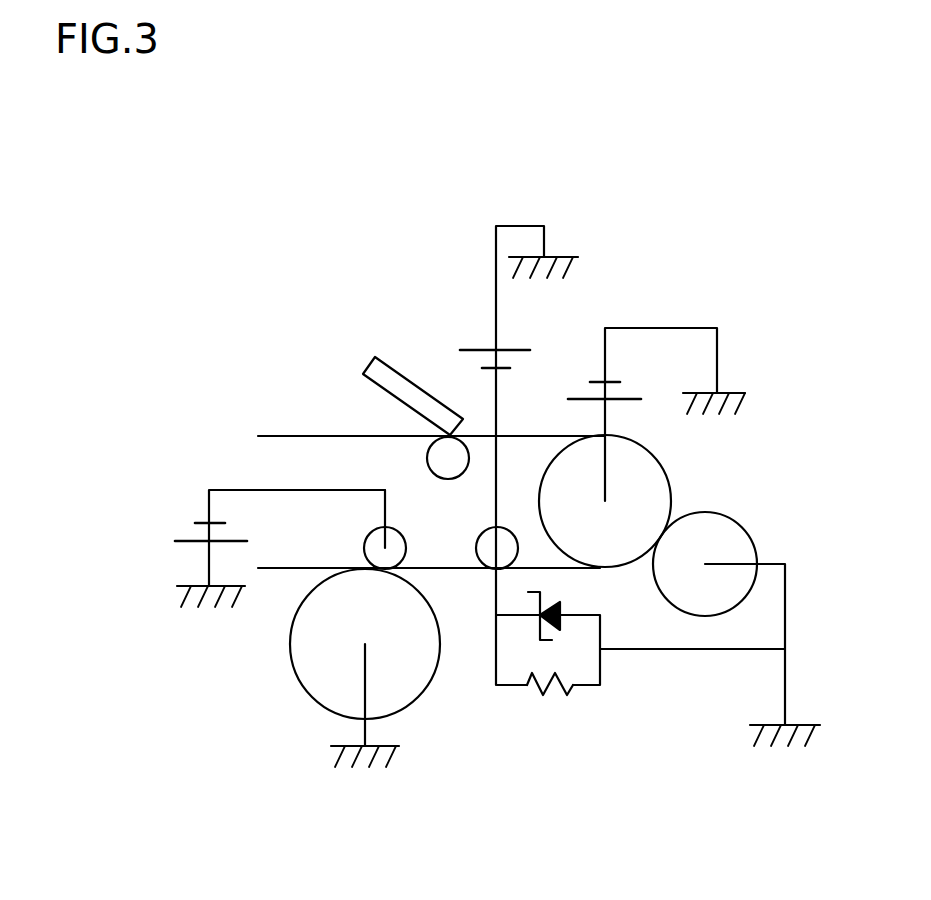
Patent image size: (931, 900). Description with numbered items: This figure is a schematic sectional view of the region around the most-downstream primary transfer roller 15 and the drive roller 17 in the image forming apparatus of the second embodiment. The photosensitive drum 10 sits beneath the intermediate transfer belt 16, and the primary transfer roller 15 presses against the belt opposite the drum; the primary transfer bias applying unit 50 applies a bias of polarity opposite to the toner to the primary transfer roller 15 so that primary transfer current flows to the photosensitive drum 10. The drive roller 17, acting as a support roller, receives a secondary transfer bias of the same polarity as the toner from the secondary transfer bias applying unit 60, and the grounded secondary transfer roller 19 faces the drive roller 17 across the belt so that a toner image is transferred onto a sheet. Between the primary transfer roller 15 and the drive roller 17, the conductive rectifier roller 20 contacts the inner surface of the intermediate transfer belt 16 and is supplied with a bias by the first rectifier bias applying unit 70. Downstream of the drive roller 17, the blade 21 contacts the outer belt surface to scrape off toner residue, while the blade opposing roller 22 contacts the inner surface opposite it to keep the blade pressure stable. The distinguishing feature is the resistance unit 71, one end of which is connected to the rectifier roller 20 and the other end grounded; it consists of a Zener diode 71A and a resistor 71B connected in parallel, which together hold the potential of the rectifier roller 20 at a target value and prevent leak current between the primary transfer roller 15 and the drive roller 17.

The photosensitive drum 10 is at (427, 683).
The primary transfer roller 15 is at (364, 548).
The intermediate transfer belt 16 is at (295, 436).
The drive roller 17 is at (633, 434).
The secondary transfer roller 19 is at (703, 514).
The rectifier roller 20 is at (476, 548).
The blade 21 is at (410, 378).
The blade opposing roller 22 is at (427, 458).
The primary transfer bias applying unit 50 is at (164, 525).
The secondary transfer bias applying unit 60 is at (593, 362).
The first rectifier bias applying unit 70 is at (477, 330).
The resistance unit 71 is at (641, 694).
The Zener diode 71A is at (560, 605).
The resistor 71B is at (543, 695).